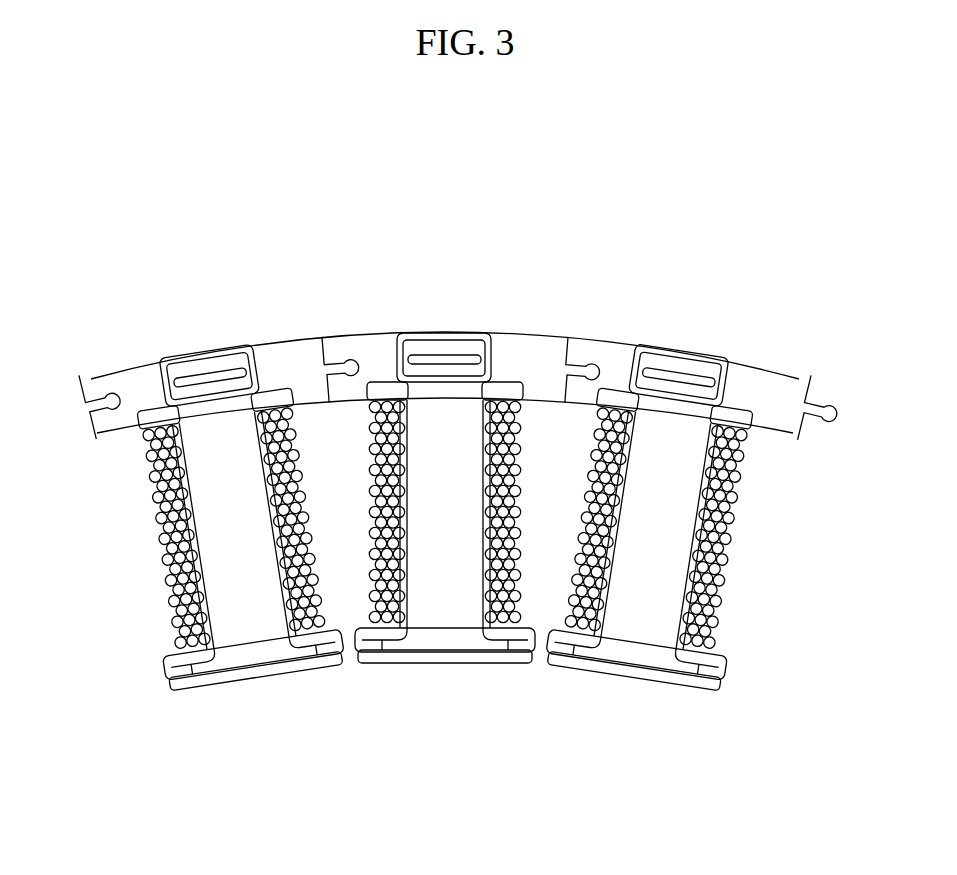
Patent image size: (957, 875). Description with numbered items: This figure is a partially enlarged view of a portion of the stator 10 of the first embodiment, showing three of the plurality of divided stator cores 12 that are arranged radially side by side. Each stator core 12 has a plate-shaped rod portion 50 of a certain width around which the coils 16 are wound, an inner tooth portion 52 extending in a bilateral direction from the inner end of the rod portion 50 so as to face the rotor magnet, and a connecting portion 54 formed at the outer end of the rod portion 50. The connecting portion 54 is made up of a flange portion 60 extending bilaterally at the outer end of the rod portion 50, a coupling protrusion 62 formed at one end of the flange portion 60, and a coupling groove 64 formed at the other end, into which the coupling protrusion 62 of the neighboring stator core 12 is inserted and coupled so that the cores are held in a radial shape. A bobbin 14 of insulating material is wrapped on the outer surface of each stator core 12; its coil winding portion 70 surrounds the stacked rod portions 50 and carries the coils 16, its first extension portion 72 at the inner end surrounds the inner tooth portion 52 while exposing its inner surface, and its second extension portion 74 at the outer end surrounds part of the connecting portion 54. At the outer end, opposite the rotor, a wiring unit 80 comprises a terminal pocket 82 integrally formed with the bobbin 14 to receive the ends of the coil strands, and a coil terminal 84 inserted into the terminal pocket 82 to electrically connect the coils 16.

The stator 10 is at (287, 208).
The stator core 12 is at (692, 528).
The bobbin 14 is at (712, 499).
The coils 16 is at (713, 629).
The rod portion 50 is at (658, 570).
The inner tooth portion 52 is at (660, 677).
The connecting portion 54 is at (413, 232).
The flange portion 60 is at (503, 357).
The coupling protrusion 62 is at (586, 354).
The coupling groove 64 is at (350, 356).
The coil winding portion 70 is at (717, 461).
The first extension portion 72 is at (720, 672).
The second extension portion 74 is at (750, 432).
The wiring unit 80 is at (673, 268).
The terminal pocket 82 is at (700, 355).
The coil terminal 84 is at (667, 362).